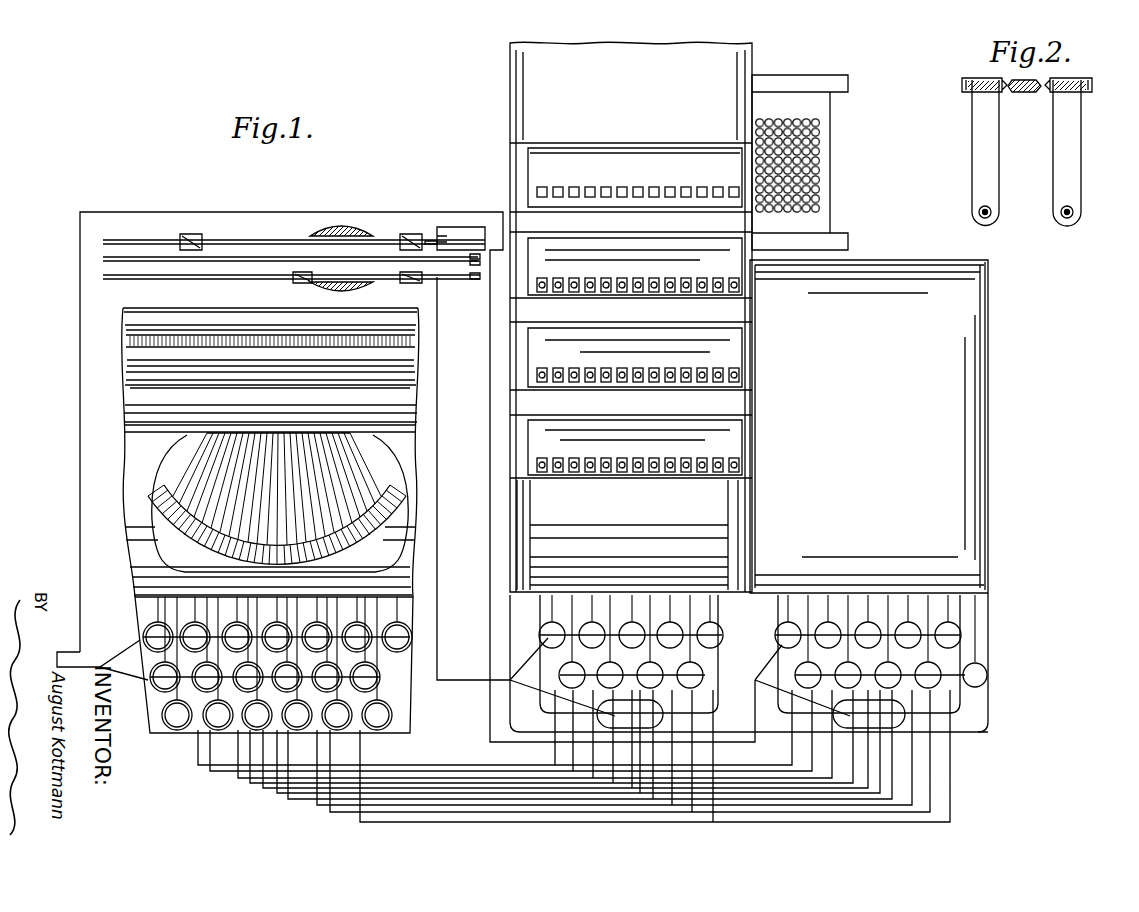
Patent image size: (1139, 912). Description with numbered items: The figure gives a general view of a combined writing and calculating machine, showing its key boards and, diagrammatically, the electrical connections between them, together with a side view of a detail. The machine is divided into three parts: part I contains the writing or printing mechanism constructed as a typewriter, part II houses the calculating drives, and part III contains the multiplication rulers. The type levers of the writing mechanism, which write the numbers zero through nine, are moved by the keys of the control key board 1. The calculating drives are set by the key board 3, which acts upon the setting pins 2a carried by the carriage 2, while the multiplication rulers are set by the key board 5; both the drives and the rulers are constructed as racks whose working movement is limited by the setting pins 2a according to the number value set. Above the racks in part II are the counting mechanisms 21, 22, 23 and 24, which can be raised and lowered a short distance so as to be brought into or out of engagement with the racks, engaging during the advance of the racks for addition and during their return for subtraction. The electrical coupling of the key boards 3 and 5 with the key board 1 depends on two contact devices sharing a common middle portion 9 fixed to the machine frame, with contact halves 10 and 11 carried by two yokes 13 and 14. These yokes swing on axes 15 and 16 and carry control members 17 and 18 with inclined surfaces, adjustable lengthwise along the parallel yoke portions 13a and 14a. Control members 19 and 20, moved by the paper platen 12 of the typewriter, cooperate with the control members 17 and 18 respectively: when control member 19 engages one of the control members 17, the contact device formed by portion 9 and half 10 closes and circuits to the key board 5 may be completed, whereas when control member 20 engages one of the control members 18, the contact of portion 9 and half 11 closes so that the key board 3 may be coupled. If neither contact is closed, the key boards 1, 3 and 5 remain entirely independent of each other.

In FIG. 1, the control key board 1 is at (172, 680).
In FIG. 1, the carriage 2 is at (822, 160).
In FIG. 1, the setting pins 2a is at (820, 120).
In FIG. 1, the key board 3 is at (538, 636).
In FIG. 1, the key board 5 is at (770, 650).
In FIG. 1, the common middle portion of the contact devices 9 is at (482, 260).
In FIG. 1, the contact half 10 is at (478, 236).
In FIG. 1, the contact half 11 is at (475, 281).
In FIG. 1, the paper platen 12 is at (160, 396).
In FIG. 2, the yoke 13 is at (985, 150).
In FIG. 1, the yoke portion 13a is at (434, 240).
In FIG. 2, the yoke portion 13a is at (975, 93).
In FIG. 2, the yoke 14 is at (1062, 172).
In FIG. 1, the yoke portion 14a is at (130, 285).
In FIG. 2, the yoke portion 14a is at (1060, 93).
In FIG. 2, the axis 15 is at (985, 219).
In FIG. 2, the axis 16 is at (1067, 219).
In FIG. 1, the control members 17 is at (193, 240).
In FIG. 1, the control members 18 is at (300, 278).
In FIG. 1, the control member 19 is at (333, 229).
In FIG. 1, the control member 20 is at (341, 296).
In FIG. 1, the counting mechanism 21 is at (605, 446).
In FIG. 1, the counting mechanism 22 is at (605, 352).
In FIG. 1, the counting mechanism 23 is at (595, 260).
In FIG. 1, the counting mechanism 24 is at (588, 165).
In FIG. 1, the part of the machine containing the writing mechanism I is at (157, 492).
In FIG. 1, the part of the machine containing the calculating drives II is at (533, 525).
In FIG. 1, the part of the machine containing the multiplication rulers III is at (960, 548).